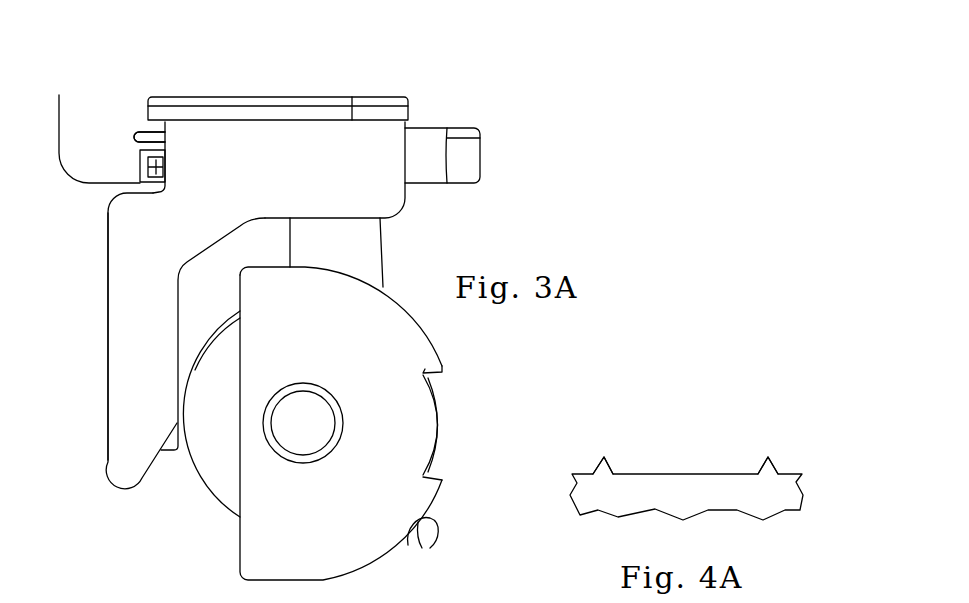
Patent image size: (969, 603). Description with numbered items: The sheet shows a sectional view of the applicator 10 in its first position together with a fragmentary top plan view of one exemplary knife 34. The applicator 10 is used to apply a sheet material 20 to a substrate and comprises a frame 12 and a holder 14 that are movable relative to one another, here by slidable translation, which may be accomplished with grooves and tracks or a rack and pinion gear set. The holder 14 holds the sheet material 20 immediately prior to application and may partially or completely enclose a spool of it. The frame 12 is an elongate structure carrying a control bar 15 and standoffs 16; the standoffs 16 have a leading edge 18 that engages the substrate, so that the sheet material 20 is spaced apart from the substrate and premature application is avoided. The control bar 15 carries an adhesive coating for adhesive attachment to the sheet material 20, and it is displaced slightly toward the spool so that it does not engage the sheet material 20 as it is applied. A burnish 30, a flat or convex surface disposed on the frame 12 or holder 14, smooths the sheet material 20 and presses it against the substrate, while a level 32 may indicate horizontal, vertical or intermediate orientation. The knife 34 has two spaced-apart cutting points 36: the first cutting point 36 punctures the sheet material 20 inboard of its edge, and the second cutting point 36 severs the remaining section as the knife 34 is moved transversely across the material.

In FIG. 3A, the applicator 10 is at (170, 543).
In FIG. 3A, the frame 12 is at (385, 200).
In FIG. 3A, the holder 14 is at (445, 337).
In FIG. 3A, the control bar 15 is at (140, 167).
In FIG. 3A, the standoffs 16 is at (130, 395).
In FIG. 3A, the leading edge 18 is at (108, 371).
In FIG. 3A, the sheet material 20 is at (86, 187).
In FIG. 3A, the burnish 30 is at (273, 96).
In FIG. 3A, the level 32 is at (418, 545).
In FIG. 3A, the knife 34 is at (132, 131).
In FIG. 4A, the knife 34 is at (735, 495).
In FIG. 3A, the cutting points 36 is at (136, 137).
In FIG. 4A, the cutting points 36 is at (604, 457).